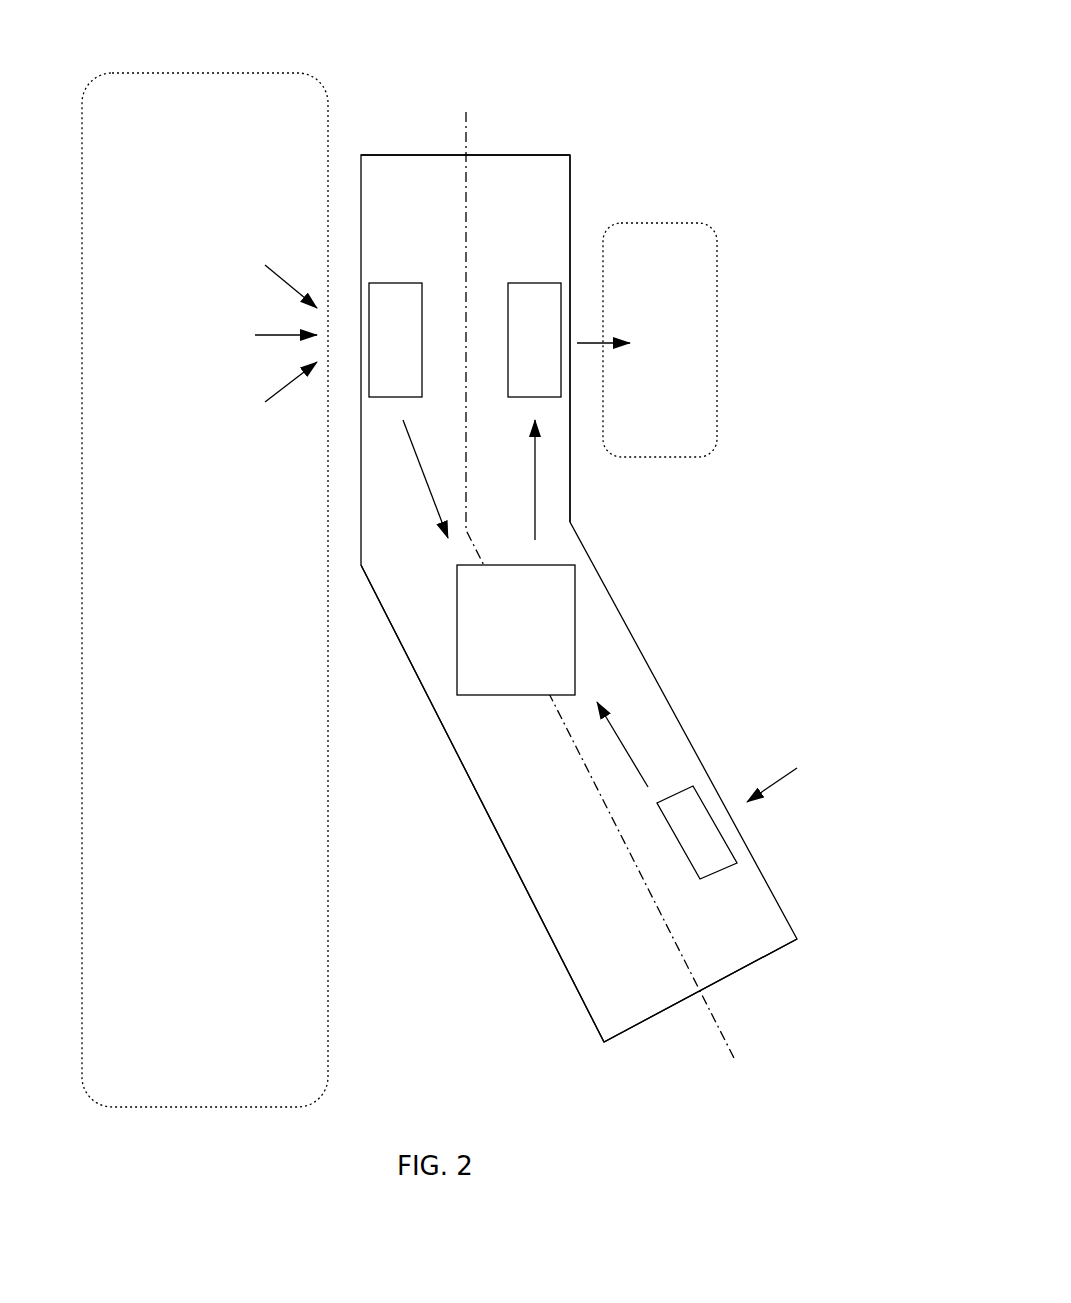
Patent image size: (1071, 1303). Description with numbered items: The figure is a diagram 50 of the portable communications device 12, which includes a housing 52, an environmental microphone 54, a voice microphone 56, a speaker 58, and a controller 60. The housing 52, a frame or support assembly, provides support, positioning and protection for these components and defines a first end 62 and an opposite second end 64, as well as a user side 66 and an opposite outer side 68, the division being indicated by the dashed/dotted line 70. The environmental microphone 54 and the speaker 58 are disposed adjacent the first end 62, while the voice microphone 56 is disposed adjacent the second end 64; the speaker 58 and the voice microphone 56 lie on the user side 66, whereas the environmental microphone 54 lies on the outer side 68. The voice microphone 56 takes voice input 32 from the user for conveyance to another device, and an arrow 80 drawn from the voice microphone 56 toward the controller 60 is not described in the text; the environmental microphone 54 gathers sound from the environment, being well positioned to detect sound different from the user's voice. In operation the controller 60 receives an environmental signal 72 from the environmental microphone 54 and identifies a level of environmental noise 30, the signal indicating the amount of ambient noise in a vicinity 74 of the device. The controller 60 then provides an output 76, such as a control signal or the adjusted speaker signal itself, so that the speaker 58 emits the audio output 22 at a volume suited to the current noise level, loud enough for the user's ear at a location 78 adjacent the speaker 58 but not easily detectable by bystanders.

The portable communications device 12 is at (615, 118).
The audio output 22 is at (597, 340).
The environmental noise 30 is at (290, 385).
The voice input 32 is at (777, 780).
The diagram 50 is at (728, 101).
The housing 52 is at (455, 750).
The environmental microphone 54 is at (395, 340).
The voice microphone 56 is at (697, 832).
The speaker 58 is at (534, 340).
The controller 60 is at (516, 630).
The first end 62 is at (430, 155).
The second end 64 is at (675, 1008).
The user side 66 is at (571, 500).
The outer side 68 is at (403, 660).
The dashed/dotted line 70 is at (466, 240).
The environmental signal 72 is at (423, 470).
The vicinity 74 is at (205, 590).
The output 76 is at (533, 490).
The location 78 is at (660, 340).
The third airflow path 80 is at (622, 743).